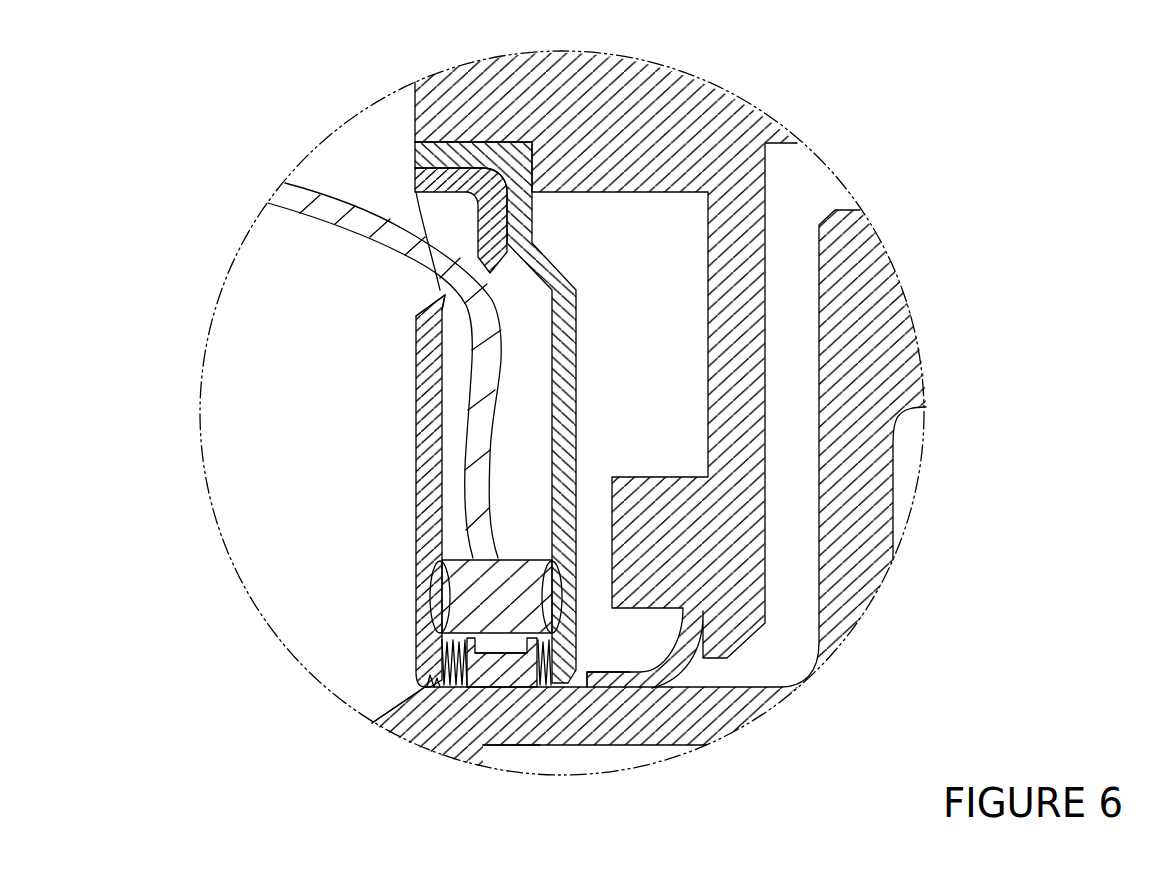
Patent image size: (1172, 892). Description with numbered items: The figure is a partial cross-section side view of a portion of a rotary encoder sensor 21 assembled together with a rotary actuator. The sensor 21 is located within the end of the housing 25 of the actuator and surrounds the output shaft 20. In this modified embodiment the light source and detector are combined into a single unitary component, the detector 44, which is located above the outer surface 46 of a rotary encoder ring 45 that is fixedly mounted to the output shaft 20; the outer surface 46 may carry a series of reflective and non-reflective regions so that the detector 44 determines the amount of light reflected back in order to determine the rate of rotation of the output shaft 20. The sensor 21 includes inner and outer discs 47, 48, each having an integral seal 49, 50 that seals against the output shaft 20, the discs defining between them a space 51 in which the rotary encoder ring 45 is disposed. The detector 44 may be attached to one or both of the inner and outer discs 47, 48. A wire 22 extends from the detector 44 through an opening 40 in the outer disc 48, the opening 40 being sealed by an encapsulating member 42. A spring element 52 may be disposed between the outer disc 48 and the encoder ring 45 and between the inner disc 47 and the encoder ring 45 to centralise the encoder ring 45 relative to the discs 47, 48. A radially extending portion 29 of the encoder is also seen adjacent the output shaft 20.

The output shaft 20 is at (556, 740).
The sensor 21 is at (509, 492).
The wire 22 is at (327, 217).
The housing 25 is at (727, 105).
The radially extending portion 29 is at (598, 682).
The opening 40 is at (433, 285).
The encapsulating member 42 is at (433, 218).
The detector 44 is at (428, 574).
The rotary encoder ring 45 is at (486, 675).
The outer surface 46 is at (500, 650).
The inner disc 47 is at (566, 378).
The outer disc 48 is at (428, 388).
The seal 49 is at (560, 690).
The seal 50 is at (427, 683).
The space 51 is at (508, 458).
The spring element 52 is at (413, 738).